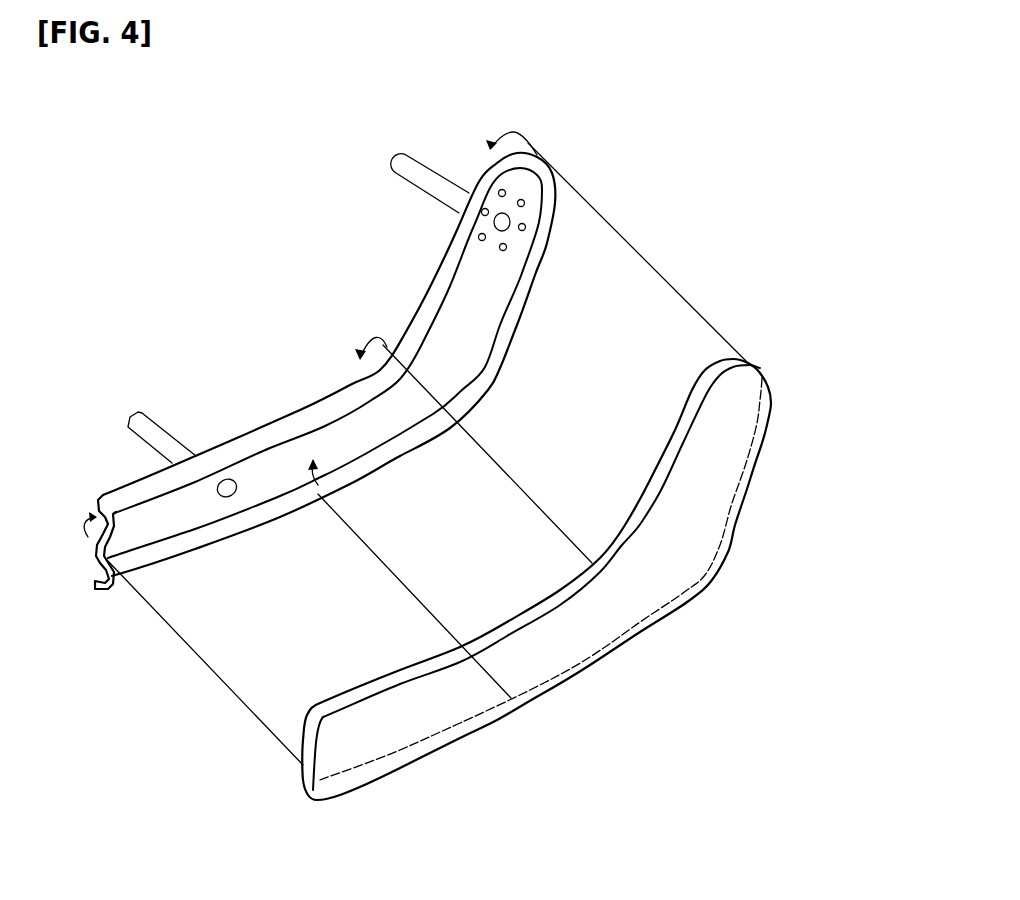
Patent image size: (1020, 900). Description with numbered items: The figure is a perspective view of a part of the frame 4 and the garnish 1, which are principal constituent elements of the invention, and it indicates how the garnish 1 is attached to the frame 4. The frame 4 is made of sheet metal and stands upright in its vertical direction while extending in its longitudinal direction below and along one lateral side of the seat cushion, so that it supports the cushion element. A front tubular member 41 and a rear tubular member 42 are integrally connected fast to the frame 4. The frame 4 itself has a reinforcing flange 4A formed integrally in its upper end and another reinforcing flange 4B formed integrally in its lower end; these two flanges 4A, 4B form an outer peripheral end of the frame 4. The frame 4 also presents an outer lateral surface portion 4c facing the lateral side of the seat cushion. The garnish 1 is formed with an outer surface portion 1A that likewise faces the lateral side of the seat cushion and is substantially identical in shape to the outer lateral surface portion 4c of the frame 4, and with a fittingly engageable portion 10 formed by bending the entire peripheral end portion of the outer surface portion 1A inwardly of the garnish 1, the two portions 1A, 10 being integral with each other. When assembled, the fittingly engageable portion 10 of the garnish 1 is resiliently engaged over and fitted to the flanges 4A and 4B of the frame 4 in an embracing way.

The garnish 1 is at (557, 579).
The outer surface portion 1A is at (650, 583).
The frame 4 is at (369, 372).
The reinforcing flange 4A is at (353, 380).
The reinforcing flange 4B is at (355, 467).
The outer lateral surface portion 4c is at (265, 480).
The fittingly engageable portion 10 is at (750, 358).
The front tubular member 41 is at (411, 166).
The rear tubular member 42 is at (152, 430).